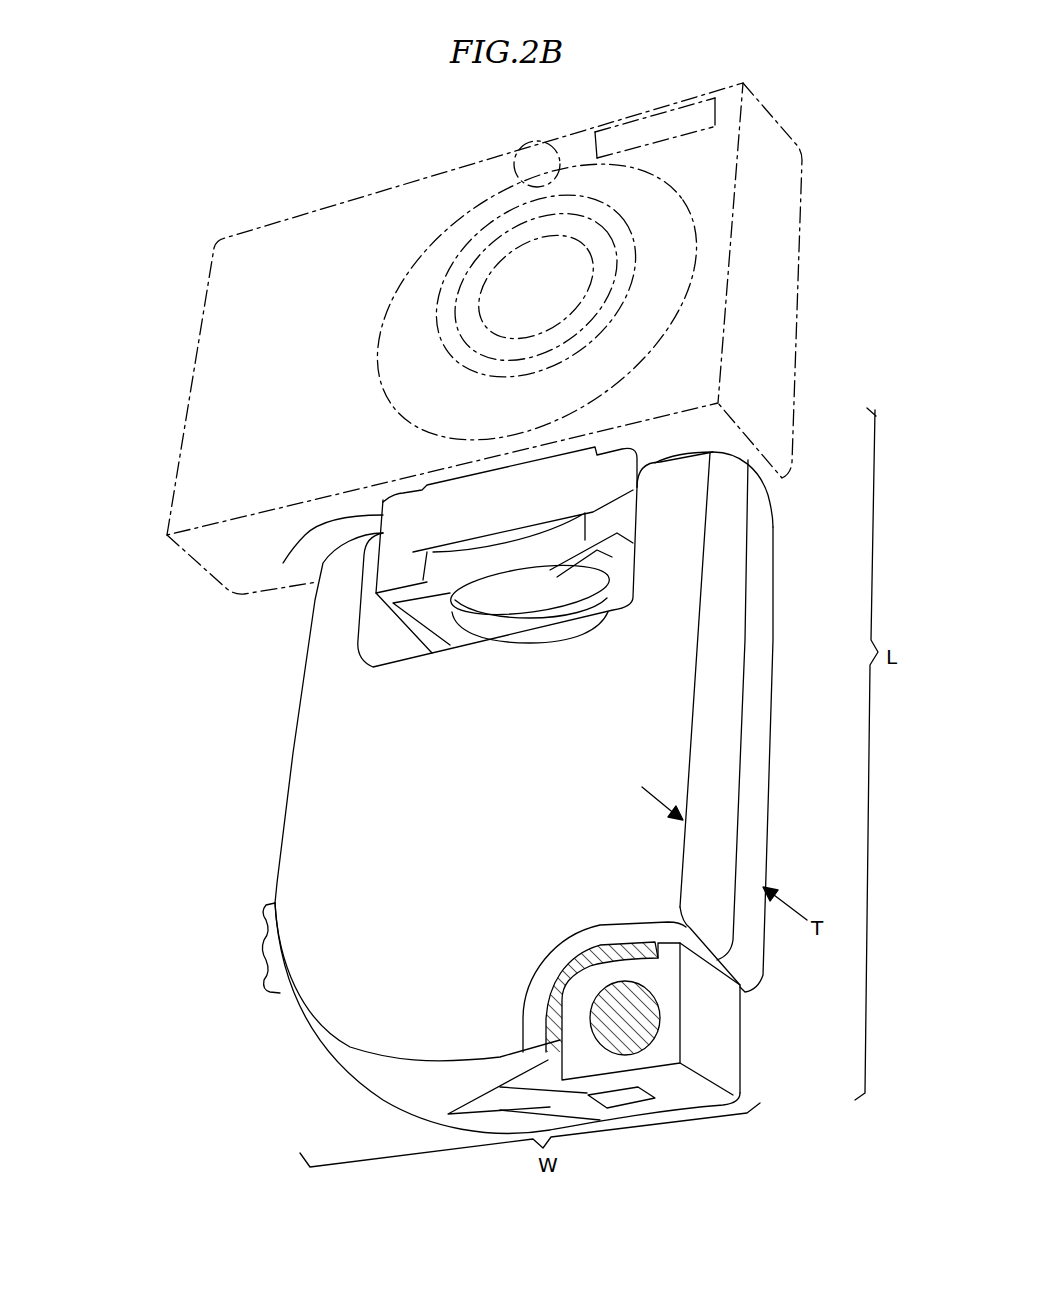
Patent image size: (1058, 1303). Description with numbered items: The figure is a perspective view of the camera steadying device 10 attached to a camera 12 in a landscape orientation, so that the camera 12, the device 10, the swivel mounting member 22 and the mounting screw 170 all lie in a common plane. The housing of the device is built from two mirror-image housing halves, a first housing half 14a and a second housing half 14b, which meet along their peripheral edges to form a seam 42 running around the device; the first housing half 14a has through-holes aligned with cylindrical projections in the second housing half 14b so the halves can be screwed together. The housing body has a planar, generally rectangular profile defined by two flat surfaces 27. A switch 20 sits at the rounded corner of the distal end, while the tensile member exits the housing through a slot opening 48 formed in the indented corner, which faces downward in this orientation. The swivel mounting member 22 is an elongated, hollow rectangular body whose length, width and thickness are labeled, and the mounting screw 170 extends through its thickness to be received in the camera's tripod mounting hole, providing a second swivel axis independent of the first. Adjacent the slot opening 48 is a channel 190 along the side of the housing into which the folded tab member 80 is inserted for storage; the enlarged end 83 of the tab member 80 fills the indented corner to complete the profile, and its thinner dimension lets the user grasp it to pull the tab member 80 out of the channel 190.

The camera 12 is at (772, 137).
The camera steadying device 10 is at (293, 752).
The flat surface 27 is at (493, 774).
The swivel mounting member 22 is at (283, 563).
The mounting screw 170 is at (527, 587).
The second housing half 14b is at (725, 548).
The first housing half 14a is at (760, 615).
The seam 42 is at (738, 755).
The switch 20 is at (263, 912).
The slot opening 48 is at (633, 943).
The channel 190 is at (592, 970).
The tab member 80 is at (713, 1032).
The enlarged end 83 is at (545, 1108).